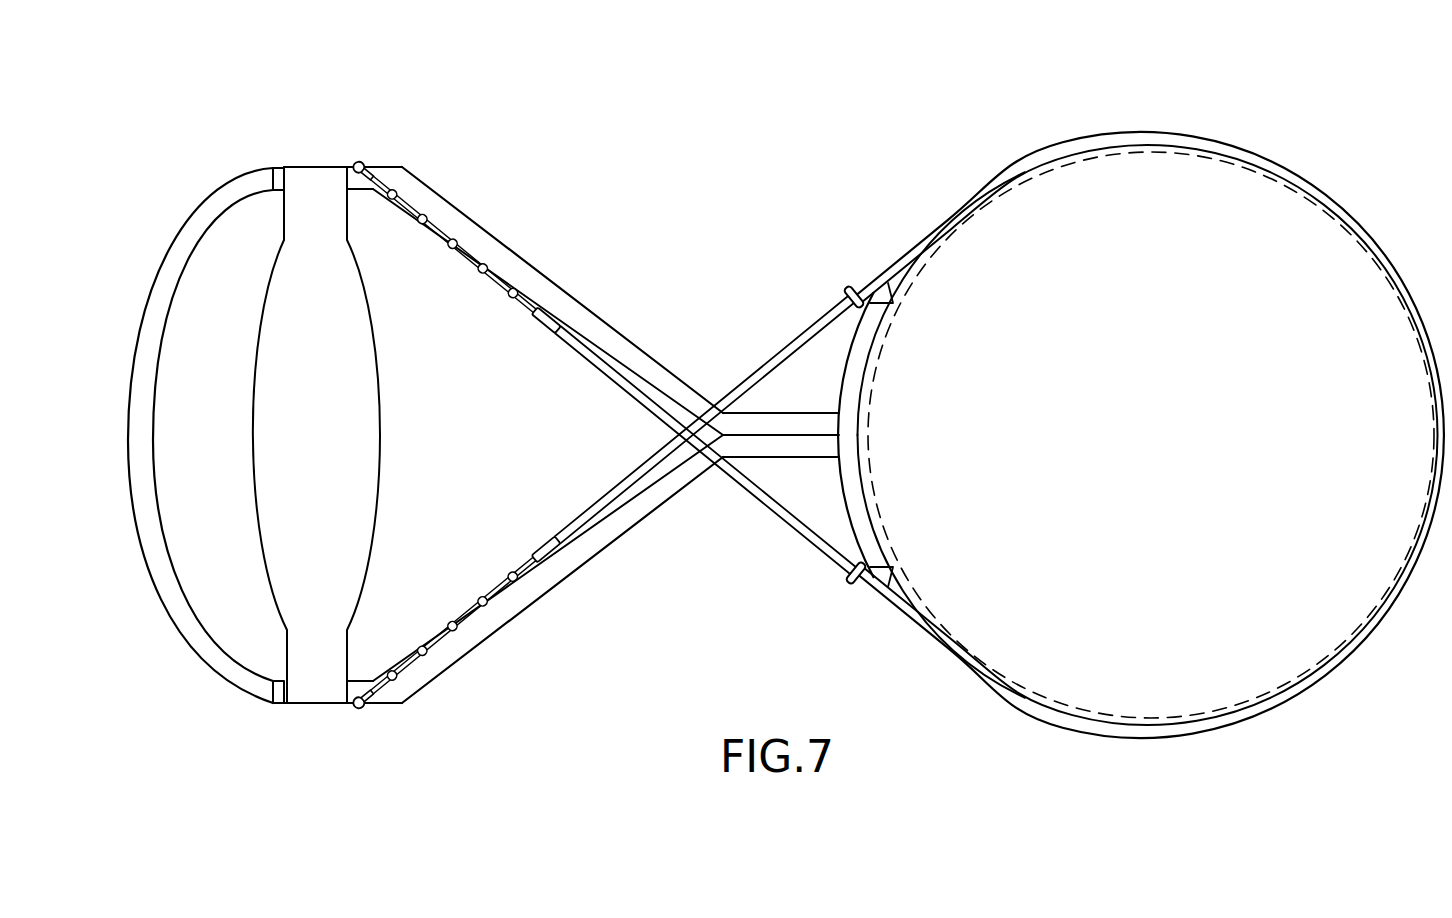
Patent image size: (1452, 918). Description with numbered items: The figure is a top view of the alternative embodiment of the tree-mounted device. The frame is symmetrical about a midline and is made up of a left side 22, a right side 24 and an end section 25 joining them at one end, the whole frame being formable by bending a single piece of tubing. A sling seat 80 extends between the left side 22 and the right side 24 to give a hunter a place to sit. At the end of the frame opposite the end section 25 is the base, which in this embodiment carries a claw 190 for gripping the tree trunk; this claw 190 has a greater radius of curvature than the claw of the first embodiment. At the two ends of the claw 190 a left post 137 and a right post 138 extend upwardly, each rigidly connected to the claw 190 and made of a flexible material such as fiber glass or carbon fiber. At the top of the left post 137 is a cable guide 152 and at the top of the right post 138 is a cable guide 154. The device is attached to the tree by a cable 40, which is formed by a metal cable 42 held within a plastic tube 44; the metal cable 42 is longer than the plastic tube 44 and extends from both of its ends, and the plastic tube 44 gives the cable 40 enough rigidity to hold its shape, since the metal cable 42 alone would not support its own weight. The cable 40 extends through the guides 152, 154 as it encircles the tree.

The left side 22 is at (584, 292).
The right side 24 is at (520, 618).
The end section 25 is at (202, 222).
The cable 40 is at (1073, 148).
The metal cable 42 is at (502, 295).
The plastic tube 44 is at (608, 380).
The sling seat 80 is at (312, 188).
The left post 137 is at (845, 290).
The right post 138 is at (857, 590).
The cable guide 152 is at (888, 308).
The cable guide 154 is at (887, 562).
The claw 190 is at (845, 522).